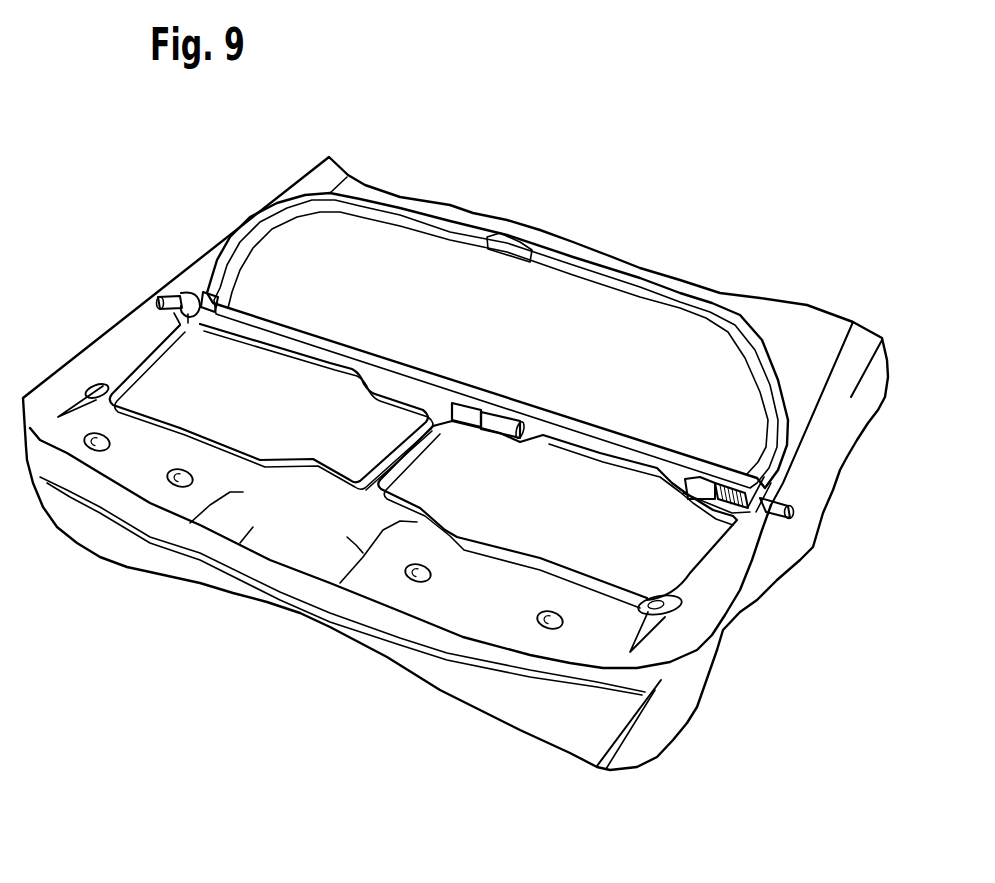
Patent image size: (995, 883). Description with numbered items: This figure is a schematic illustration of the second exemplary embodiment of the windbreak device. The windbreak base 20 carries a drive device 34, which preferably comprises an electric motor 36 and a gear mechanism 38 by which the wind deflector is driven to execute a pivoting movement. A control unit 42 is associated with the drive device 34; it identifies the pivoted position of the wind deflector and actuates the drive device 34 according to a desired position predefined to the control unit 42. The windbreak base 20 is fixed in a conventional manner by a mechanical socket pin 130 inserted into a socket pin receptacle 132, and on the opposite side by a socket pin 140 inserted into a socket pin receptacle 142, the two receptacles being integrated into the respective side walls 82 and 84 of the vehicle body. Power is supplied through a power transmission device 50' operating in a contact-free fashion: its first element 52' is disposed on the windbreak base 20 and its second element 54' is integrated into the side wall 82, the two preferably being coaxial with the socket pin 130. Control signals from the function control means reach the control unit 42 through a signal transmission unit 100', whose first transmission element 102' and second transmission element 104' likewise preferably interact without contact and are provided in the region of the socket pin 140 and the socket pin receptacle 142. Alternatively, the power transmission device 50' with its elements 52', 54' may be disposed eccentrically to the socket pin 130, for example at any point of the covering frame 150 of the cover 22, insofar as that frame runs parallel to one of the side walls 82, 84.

The windbreak base 20 is at (601, 603).
The cover 22 is at (473, 552).
The drive device 34 is at (500, 437).
The electric motor 36 is at (508, 417).
The gear mechanism 38 is at (470, 405).
The control unit 42 is at (696, 480).
The power transmission device 50' is at (800, 457).
The first element 52' is at (735, 450).
The second element 54' is at (826, 504).
The side wall 82 is at (725, 553).
The side wall 84 is at (98, 352).
The signal transmission unit 100' is at (182, 251).
The first transmission element 102' is at (494, 332).
The second transmission element 104' is at (181, 358).
The socket pin 130 is at (740, 515).
The socket pin receptacle 132 is at (778, 518).
The socket pin 140 is at (193, 300).
The socket pin receptacle 142 is at (157, 297).
The covering frame 150 is at (690, 562).